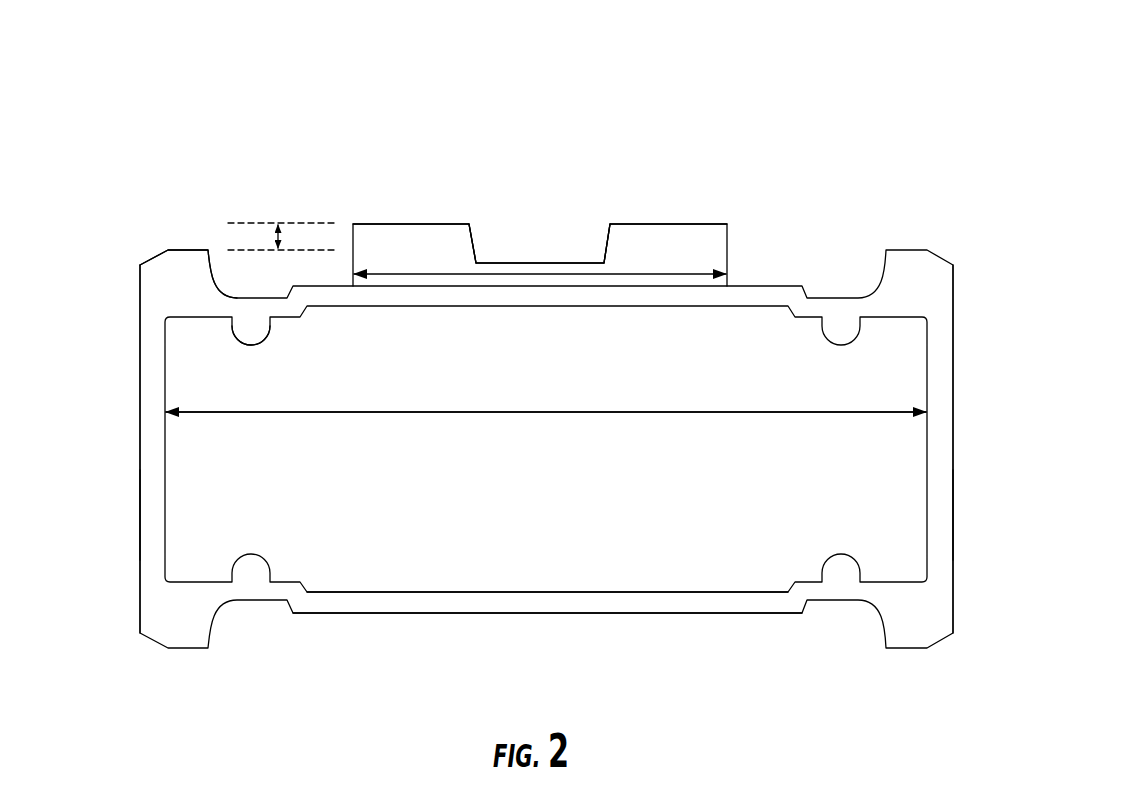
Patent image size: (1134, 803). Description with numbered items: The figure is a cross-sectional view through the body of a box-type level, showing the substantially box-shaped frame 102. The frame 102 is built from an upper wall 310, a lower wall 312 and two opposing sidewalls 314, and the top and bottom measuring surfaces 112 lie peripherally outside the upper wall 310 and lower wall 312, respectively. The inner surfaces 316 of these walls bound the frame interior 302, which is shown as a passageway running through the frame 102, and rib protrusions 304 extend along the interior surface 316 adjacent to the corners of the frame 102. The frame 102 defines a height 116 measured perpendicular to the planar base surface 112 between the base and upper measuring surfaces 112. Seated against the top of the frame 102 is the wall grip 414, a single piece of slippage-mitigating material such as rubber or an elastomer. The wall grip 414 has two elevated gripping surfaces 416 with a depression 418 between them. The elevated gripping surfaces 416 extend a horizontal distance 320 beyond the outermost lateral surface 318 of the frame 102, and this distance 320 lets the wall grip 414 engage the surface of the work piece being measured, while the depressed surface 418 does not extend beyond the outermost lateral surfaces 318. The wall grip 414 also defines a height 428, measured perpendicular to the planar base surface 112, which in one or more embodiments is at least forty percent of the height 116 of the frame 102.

The frame 102 is at (1022, 168).
The measuring surfaces 112 is at (140, 447).
The height of frame 116 is at (848, 412).
The frame interior 302 is at (590, 480).
The rib protrusions 304 is at (259, 349).
The upper wall 310 is at (953, 515).
The lower wall 312 is at (150, 510).
The sidewalls 314 is at (508, 603).
The inner surfaces 316 is at (716, 590).
The outermost lateral surface 318 is at (181, 236).
The horizontal distance 320 is at (271, 237).
The wall grip 414 is at (446, 240).
The elevated gripping surfaces 416 is at (399, 211).
The depression 418 is at (560, 261).
The height of wall grip 428 is at (642, 273).